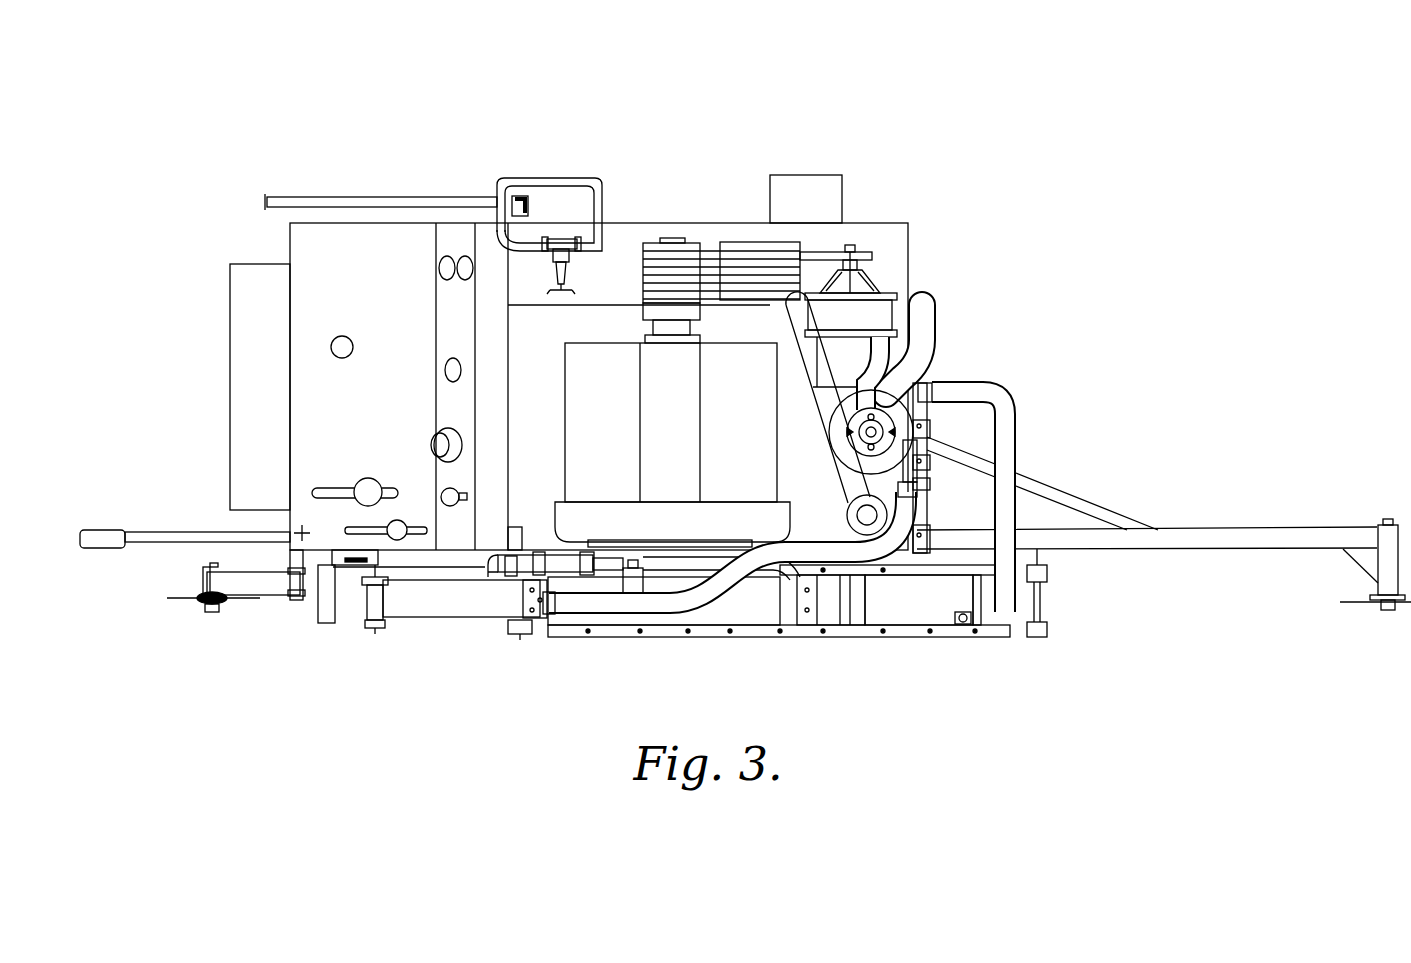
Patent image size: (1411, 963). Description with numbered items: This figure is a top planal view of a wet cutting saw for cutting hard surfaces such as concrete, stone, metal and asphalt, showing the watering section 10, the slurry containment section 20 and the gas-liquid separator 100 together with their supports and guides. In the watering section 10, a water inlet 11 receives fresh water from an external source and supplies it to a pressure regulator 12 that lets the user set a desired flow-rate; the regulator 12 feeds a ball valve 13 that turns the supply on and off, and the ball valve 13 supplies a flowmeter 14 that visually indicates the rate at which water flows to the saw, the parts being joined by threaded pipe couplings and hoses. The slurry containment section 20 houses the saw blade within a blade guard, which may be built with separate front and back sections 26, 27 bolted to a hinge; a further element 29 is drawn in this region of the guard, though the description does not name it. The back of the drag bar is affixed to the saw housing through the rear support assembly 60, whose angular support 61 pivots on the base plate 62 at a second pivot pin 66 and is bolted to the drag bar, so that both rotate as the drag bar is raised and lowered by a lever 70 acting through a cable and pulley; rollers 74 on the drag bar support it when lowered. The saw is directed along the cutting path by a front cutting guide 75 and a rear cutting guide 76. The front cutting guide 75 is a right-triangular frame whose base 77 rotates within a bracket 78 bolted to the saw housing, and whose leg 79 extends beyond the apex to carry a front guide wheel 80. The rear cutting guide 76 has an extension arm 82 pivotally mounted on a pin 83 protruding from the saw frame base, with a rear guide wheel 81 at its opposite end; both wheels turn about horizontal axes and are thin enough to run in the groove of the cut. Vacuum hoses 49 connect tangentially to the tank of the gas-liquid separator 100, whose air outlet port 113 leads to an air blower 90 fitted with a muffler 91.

The watering section 10 is at (517, 148).
The water inlet 11 is at (372, 197).
The pressure regulator 12 is at (568, 268).
The ball valve 13 is at (507, 575).
The flowmeter 14 is at (563, 552).
The slurry containment section 20 is at (903, 645).
The front section 26 is at (923, 612).
The back section 27 is at (717, 617).
The frame bracket 29 is at (852, 632).
The vacuum hoses 49 is at (605, 620).
The rear support assembly 60 is at (430, 635).
The angular support 61 is at (392, 633).
The base plate 62 is at (347, 558).
The second pivot pin 66 is at (375, 633).
The lever 70 is at (318, 617).
The rollers 74 is at (1050, 628).
The front cutting guide 75 is at (1325, 522).
The rear cutting guide 76 is at (193, 616).
The base 77 is at (927, 470).
The bracket 78 is at (927, 426).
The leg 79 is at (1277, 552).
The front guide wheel 80 is at (1362, 602).
The rear guide wheel 81 is at (197, 598).
The extension arm 82 is at (255, 573).
The pin 83 is at (292, 602).
The air blower 90 is at (880, 288).
The muffler 91 is at (848, 517).
The gas-liquid separator 100 is at (948, 402).
The air outlet port 113 is at (907, 390).